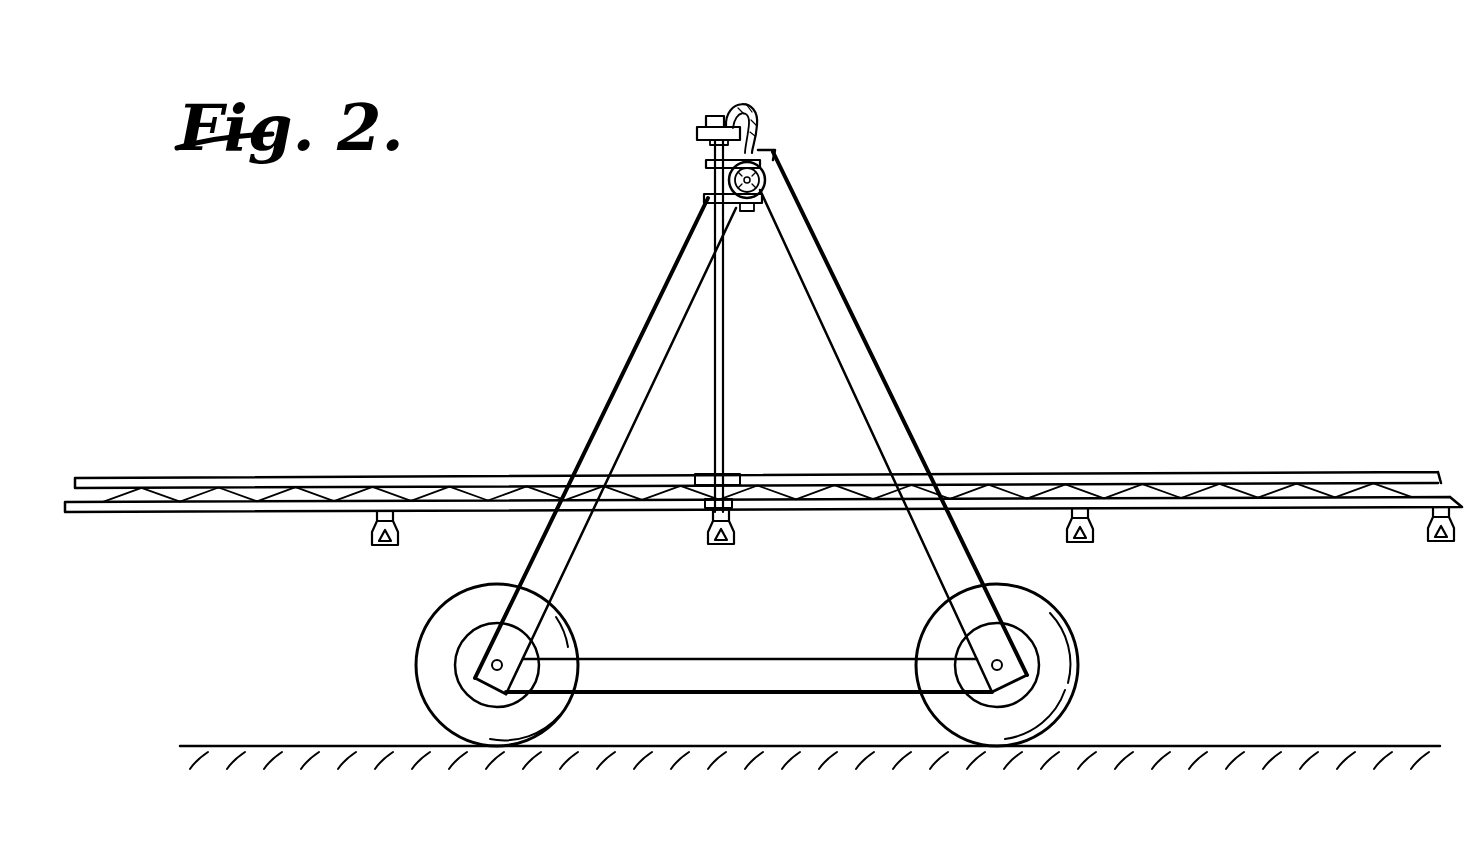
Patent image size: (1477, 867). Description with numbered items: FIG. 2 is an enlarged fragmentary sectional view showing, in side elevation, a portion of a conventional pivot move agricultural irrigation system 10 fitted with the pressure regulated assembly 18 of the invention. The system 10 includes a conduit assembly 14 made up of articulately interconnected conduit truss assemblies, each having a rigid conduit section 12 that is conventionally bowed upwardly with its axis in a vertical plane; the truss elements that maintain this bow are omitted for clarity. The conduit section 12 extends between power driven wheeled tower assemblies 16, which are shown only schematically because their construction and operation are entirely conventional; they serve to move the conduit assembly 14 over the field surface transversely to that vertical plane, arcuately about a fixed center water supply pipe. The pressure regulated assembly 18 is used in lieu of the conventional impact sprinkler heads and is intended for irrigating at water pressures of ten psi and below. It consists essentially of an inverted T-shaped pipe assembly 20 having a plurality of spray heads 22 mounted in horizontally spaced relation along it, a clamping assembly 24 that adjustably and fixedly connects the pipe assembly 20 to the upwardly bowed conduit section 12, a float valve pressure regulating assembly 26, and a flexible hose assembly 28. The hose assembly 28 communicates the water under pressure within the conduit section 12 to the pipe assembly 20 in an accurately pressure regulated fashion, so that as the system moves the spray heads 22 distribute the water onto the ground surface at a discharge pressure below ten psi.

The pivot move agricultural irrigation system 10 is at (868, 260).
The conduit section 12 is at (766, 182).
The conduit assembly 14 is at (776, 162).
The wheeled tower assembly 16 is at (889, 369).
The pressure regulated assembly 18 is at (696, 132).
The inverted T-shaped pipe assembly 20 is at (727, 418).
The spray heads 22 is at (385, 552).
The clamping assembly 24 is at (704, 173).
The float valve pressure regulating assembly 26 is at (706, 117).
The flexible hose assembly 28 is at (769, 121).